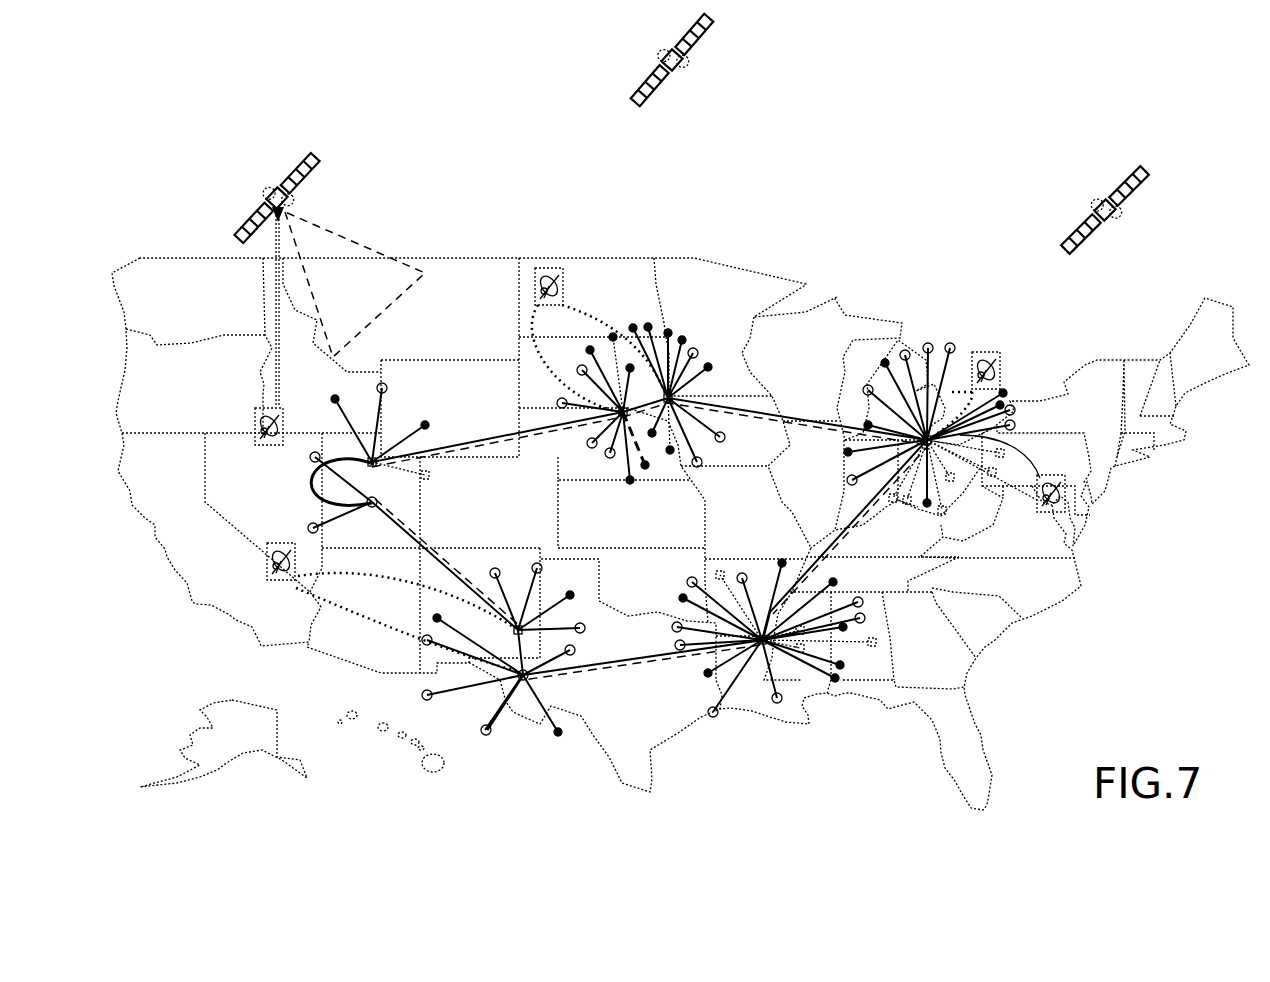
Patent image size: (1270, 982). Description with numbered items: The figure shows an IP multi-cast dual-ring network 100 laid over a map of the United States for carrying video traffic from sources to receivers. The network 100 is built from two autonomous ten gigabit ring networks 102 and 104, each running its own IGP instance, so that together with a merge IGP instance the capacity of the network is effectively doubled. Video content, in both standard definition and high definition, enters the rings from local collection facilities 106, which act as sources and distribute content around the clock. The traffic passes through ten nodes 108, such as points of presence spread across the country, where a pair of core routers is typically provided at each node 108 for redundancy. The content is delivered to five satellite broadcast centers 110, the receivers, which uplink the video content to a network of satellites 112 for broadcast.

The IP multi-cast dual-ring network 100 is at (808, 368).
The ring network 102 is at (487, 455).
The ring network 104 is at (470, 437).
The local collection facility 106 is at (823, 683).
The node 108 is at (518, 690).
The satellite broadcast center 110 is at (278, 593).
The satellite 112 is at (250, 197).